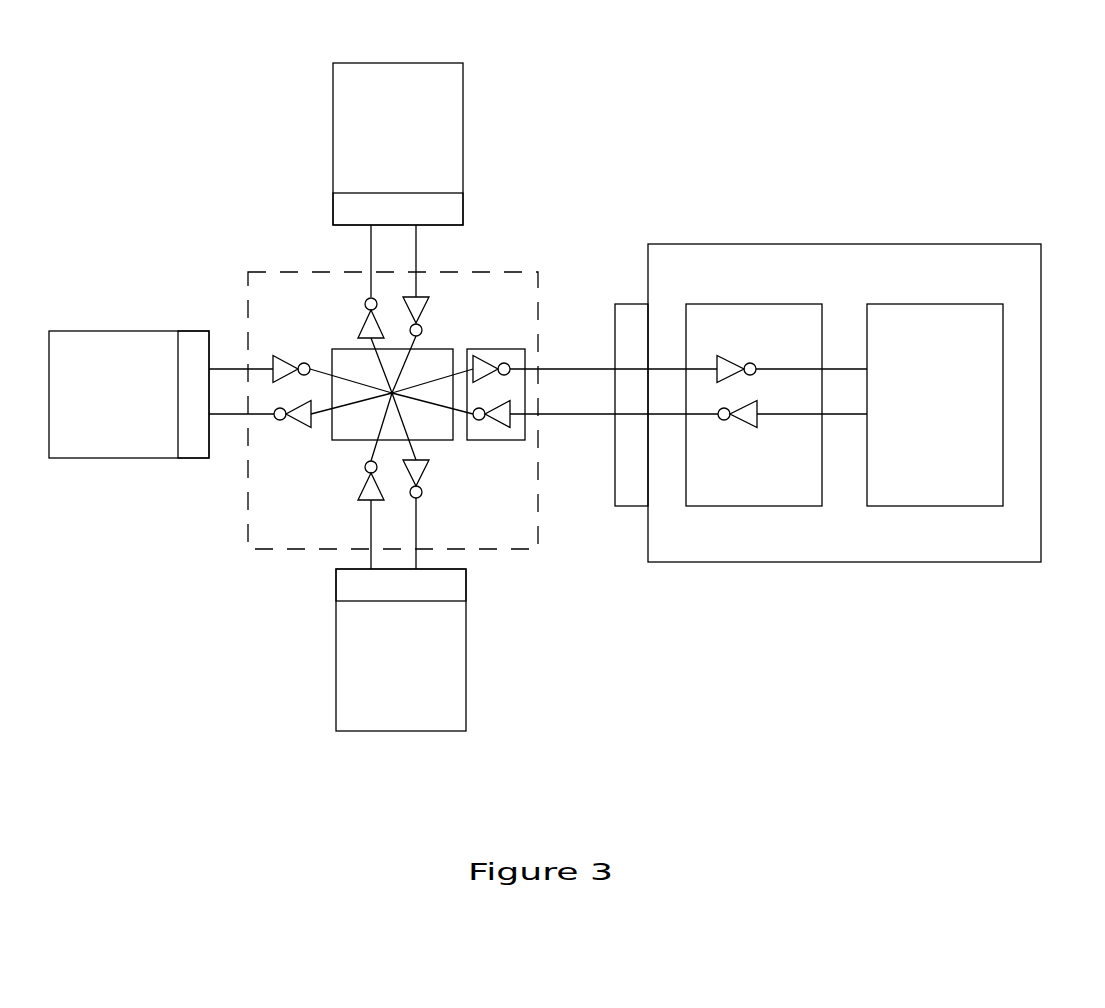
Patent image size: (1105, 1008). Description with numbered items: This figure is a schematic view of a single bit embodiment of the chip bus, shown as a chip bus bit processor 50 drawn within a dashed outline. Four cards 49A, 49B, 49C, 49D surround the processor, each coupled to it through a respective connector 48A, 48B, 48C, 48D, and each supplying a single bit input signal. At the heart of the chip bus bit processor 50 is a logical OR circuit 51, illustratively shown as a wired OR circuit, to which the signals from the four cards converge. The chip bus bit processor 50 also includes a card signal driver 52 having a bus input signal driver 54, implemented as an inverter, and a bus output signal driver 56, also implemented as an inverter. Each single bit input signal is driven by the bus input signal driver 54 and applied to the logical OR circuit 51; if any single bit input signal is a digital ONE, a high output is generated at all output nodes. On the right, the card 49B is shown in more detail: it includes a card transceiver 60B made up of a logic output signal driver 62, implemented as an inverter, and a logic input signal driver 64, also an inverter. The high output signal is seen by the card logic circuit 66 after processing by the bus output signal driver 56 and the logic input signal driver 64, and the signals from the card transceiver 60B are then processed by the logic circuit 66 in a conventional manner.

The card 49A is at (463, 75).
The connector 48A is at (463, 207).
The card 49B is at (970, 244).
The connector 48B is at (622, 304).
The card 49C is at (466, 672).
The connector 48C is at (466, 582).
The card 49D is at (73, 458).
The connector 48D is at (187, 458).
The chip bus bit processor 50 is at (290, 303).
The logical OR circuit 51 is at (442, 442).
The card signal driver 52 is at (490, 442).
The bus input signal driver 54 is at (507, 422).
The bus output signal driver 56 is at (477, 383).
The card transceiver 60B is at (715, 304).
The logic output signal driver 62 is at (758, 423).
The logic input signal driver 64 is at (722, 356).
The logic circuit 66 is at (893, 304).